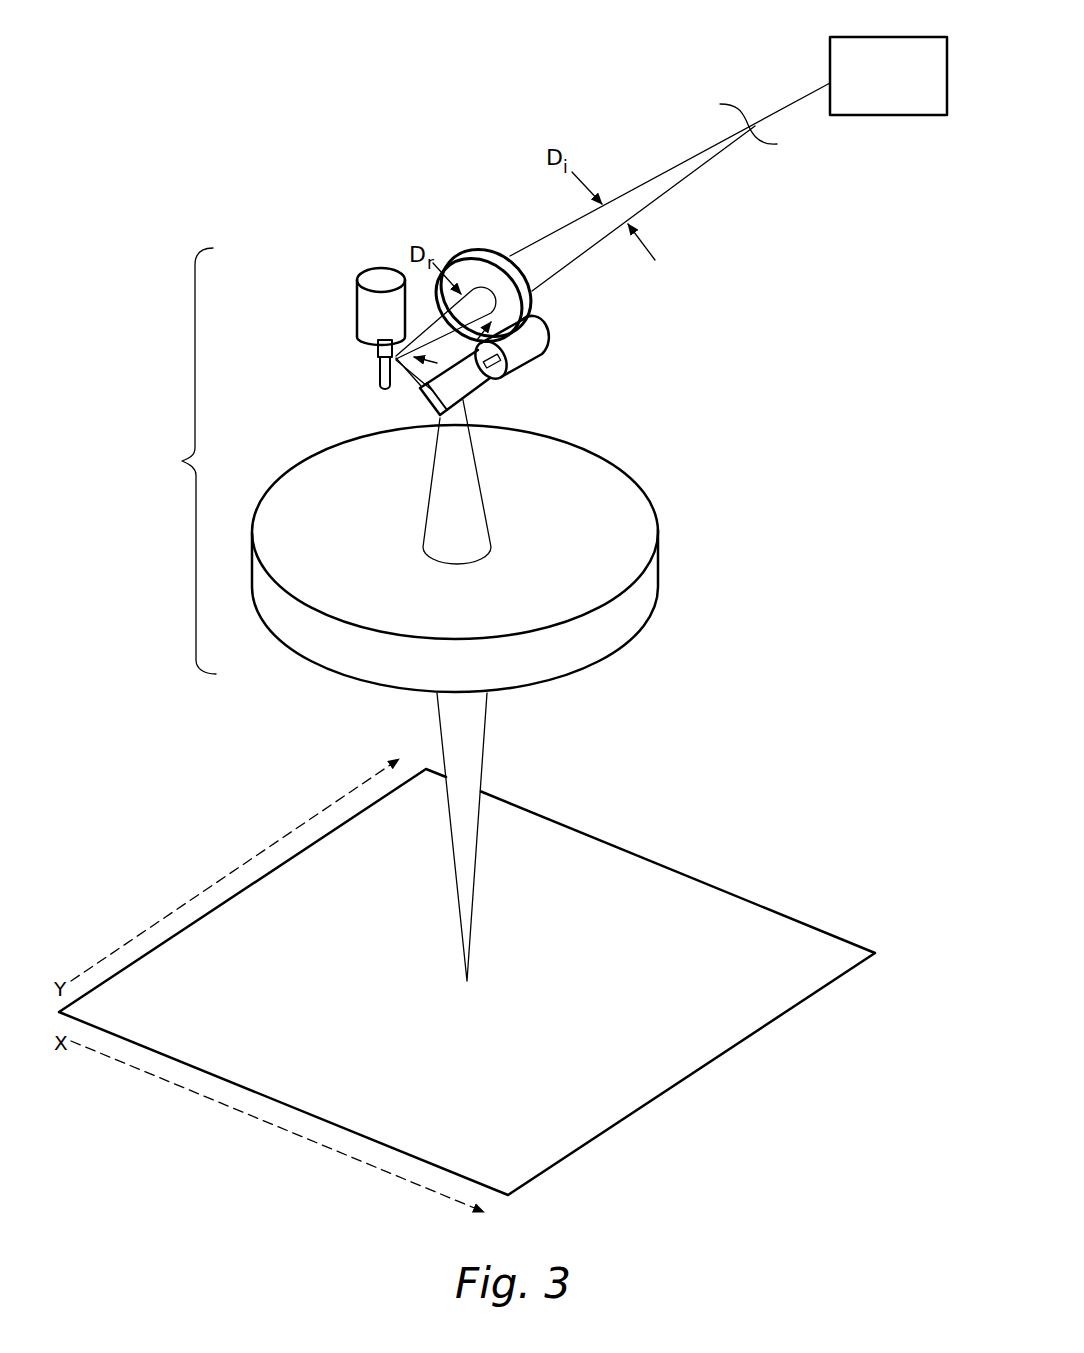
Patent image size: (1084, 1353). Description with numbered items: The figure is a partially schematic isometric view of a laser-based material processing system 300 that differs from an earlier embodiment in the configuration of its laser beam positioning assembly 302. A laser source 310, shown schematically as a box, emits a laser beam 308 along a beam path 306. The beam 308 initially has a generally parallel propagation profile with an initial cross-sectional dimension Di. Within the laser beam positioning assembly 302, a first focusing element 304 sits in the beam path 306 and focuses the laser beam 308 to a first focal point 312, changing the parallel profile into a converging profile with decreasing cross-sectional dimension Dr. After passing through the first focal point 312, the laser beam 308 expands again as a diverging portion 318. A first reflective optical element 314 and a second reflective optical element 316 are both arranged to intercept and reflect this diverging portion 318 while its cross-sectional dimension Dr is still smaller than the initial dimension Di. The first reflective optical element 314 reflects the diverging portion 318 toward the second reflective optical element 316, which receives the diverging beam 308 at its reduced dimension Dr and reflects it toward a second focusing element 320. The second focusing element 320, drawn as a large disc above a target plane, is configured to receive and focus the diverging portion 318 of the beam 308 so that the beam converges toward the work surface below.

The laser-based material processing system 300 is at (250, 130).
The laser beam positioning assembly 302 is at (180, 461).
The first focusing element 304 is at (465, 270).
The beam path 306 is at (706, 191).
The laser beam 308 is at (702, 148).
The laser source 310 is at (862, 37).
The first focal point 312 is at (462, 382).
The first reflective optical element 314 is at (381, 366).
The second reflective optical element 316 is at (472, 410).
The diverging portion 318 is at (403, 355).
The second focusing element 320 is at (652, 580).